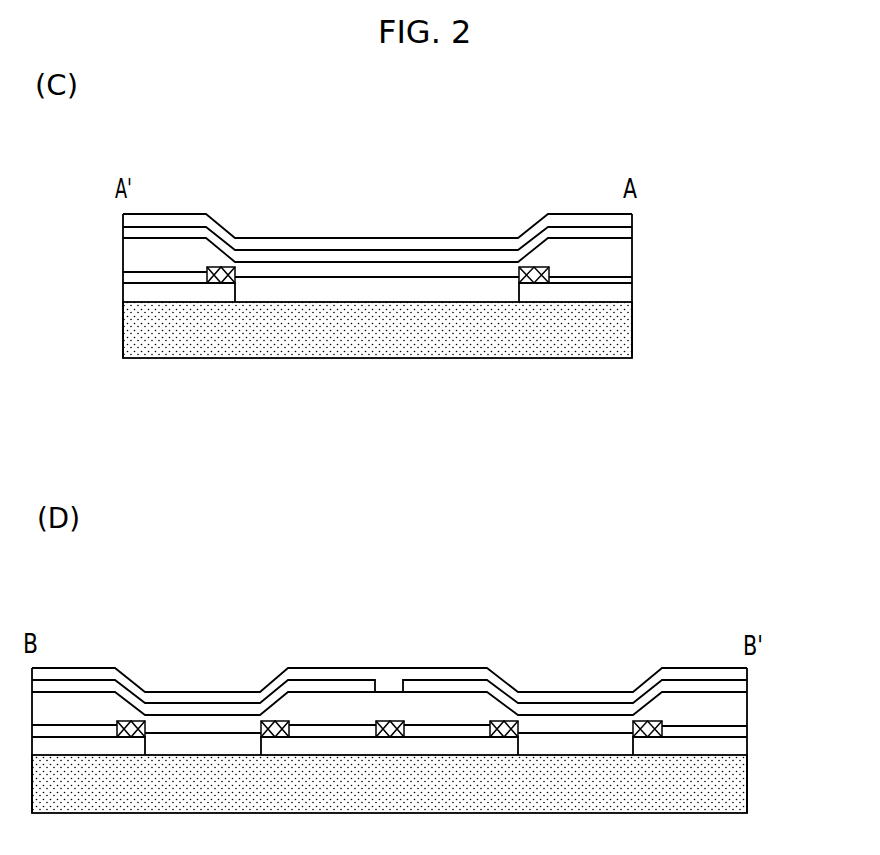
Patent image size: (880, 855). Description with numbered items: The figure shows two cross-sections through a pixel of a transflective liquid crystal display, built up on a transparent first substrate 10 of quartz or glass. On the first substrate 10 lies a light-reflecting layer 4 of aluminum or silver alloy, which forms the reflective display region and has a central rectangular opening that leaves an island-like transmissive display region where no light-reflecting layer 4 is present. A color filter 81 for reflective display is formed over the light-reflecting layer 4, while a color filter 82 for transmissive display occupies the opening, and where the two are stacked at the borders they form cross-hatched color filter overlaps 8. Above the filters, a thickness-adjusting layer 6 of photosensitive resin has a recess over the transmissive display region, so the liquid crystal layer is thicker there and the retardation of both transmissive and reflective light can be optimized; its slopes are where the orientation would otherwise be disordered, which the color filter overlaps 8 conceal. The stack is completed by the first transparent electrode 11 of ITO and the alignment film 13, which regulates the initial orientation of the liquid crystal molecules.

The first substrate 10 is at (625, 332).
The light-reflecting layer 4 is at (625, 295).
The color filter for reflective display 81 is at (632, 278).
The color filter for transmissive display 82 is at (382, 285).
The color filter overlap 8 is at (228, 267).
The thickness-adjusting layer 6 is at (625, 257).
The first transparent electrode 11 is at (632, 229).
The alignment film 13 is at (632, 214).